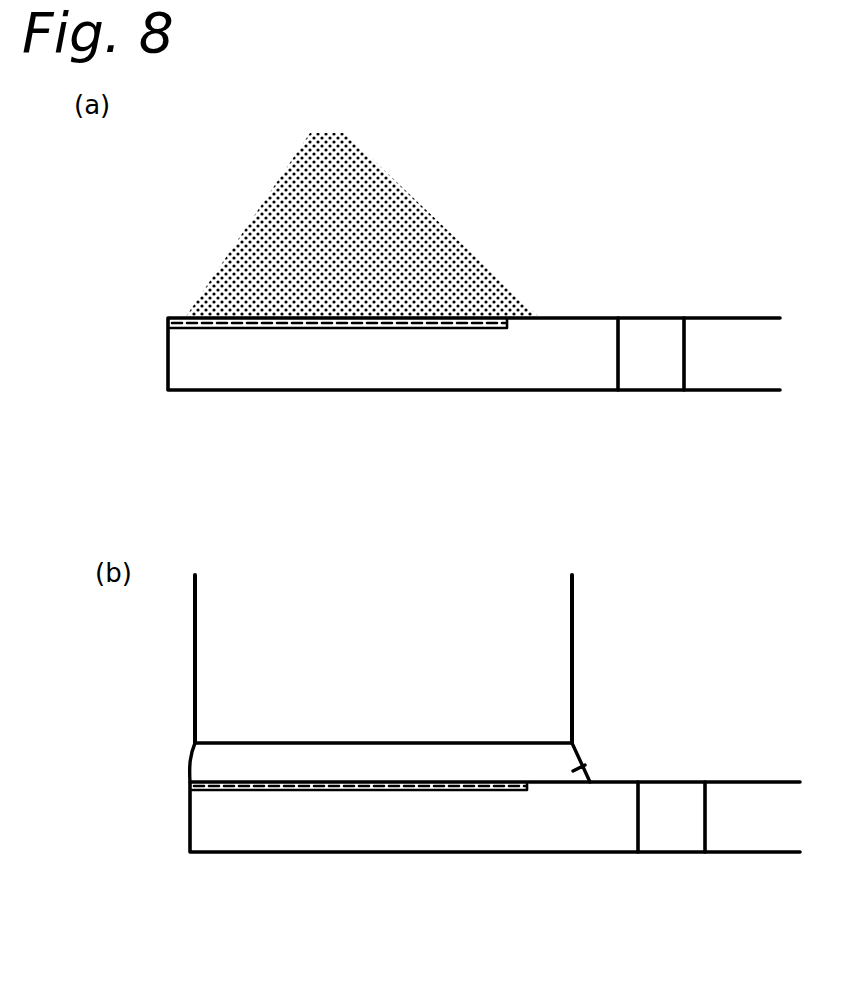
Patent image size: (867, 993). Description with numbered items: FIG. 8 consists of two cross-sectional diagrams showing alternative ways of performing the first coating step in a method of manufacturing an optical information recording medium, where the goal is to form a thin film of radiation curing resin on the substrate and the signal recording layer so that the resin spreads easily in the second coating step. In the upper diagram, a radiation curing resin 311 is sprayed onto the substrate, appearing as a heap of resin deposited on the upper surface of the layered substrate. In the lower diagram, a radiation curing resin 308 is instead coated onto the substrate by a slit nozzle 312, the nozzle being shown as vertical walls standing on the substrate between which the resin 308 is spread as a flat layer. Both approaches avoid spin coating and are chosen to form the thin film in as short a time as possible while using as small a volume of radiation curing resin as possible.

The radiation curing resin 308 is at (585, 762).
The radiation curing resin 311 is at (405, 190).
The slit nozzle 312 is at (572, 625).